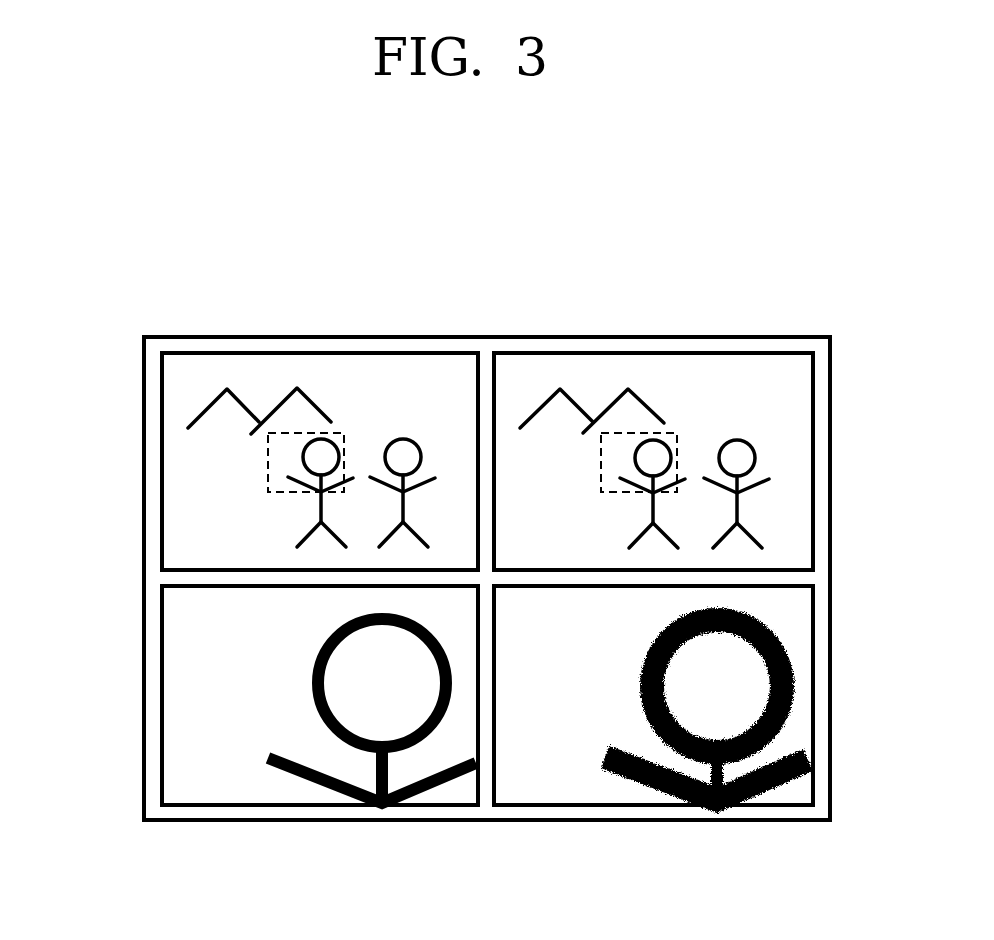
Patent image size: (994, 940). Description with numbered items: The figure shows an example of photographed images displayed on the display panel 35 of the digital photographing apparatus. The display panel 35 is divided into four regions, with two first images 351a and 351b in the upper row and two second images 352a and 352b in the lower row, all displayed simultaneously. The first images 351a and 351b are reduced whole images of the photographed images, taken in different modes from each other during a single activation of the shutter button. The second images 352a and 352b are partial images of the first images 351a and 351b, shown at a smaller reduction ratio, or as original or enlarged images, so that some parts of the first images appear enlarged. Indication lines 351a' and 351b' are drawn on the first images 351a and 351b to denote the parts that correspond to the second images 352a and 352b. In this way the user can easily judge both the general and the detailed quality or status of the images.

The display panel 35 is at (134, 388).
The first image 351a is at (265, 407).
The first image 351b is at (706, 407).
The indication line 351a' is at (198, 462).
The indication line 351b' is at (759, 445).
The second image 352a is at (160, 693).
The second image 352b is at (815, 693).